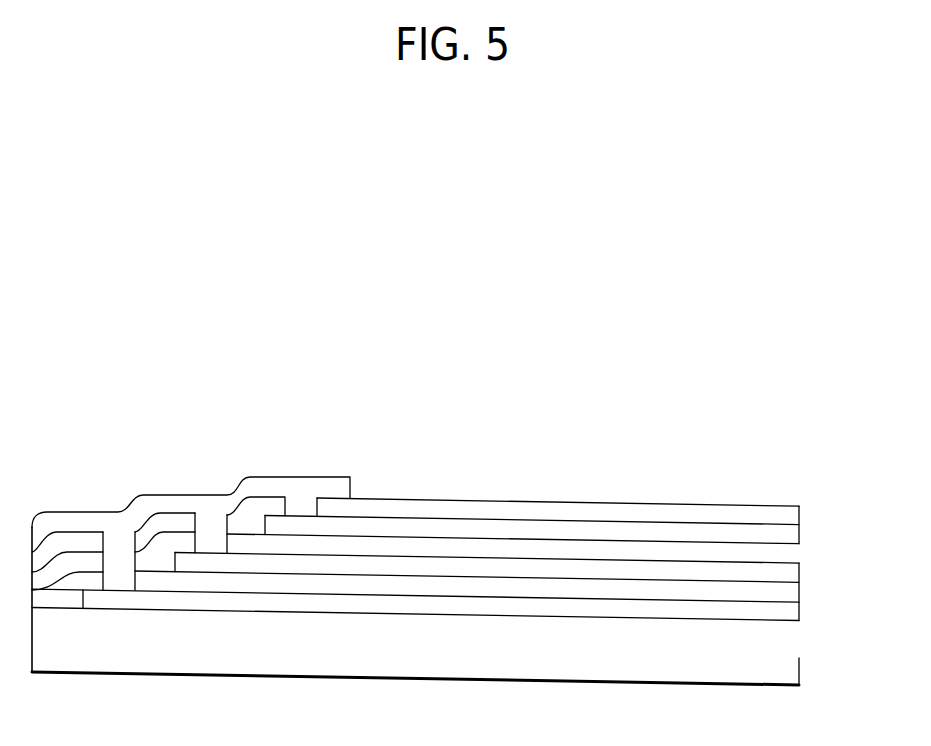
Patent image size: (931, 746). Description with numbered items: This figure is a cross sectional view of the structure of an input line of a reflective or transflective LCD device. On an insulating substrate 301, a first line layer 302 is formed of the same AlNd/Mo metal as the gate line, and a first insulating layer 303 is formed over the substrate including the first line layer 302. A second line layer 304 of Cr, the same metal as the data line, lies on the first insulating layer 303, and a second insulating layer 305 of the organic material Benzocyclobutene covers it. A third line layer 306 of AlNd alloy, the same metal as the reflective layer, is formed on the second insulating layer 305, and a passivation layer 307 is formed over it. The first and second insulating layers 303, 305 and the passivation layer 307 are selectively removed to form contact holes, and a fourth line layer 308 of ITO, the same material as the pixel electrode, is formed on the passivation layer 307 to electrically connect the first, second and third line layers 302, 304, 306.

The insulating substrate 301 is at (793, 644).
The first line layer 302 is at (688, 610).
The first insulating layer 303 is at (793, 594).
The second line layer 304 is at (538, 568).
The second insulating layer 305 is at (793, 553).
The third line layer 306 is at (635, 532).
The passivation layer 307 is at (730, 510).
The fourth line layer 308 is at (323, 483).